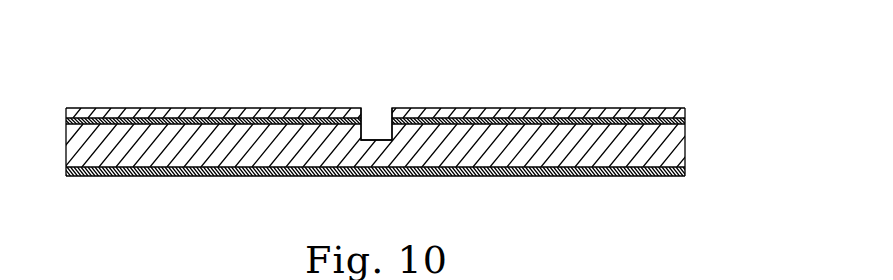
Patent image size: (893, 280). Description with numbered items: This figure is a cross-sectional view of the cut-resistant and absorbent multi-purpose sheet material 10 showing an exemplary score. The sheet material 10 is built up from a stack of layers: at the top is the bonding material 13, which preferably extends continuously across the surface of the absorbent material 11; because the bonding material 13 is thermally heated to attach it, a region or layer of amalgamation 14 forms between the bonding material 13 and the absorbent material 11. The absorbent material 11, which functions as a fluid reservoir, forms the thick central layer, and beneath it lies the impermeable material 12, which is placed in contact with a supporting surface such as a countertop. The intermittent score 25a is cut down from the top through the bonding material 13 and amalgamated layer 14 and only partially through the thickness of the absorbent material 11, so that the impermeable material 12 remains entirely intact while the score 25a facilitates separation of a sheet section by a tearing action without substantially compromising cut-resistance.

The sheet material 10 is at (503, 82).
The absorbent material 11 is at (686, 146).
The impermeable material 12 is at (686, 172).
The bonding material 13 is at (686, 108).
The layer of amalgamation 14 is at (686, 121).
The intermittent score 25a is at (378, 124).